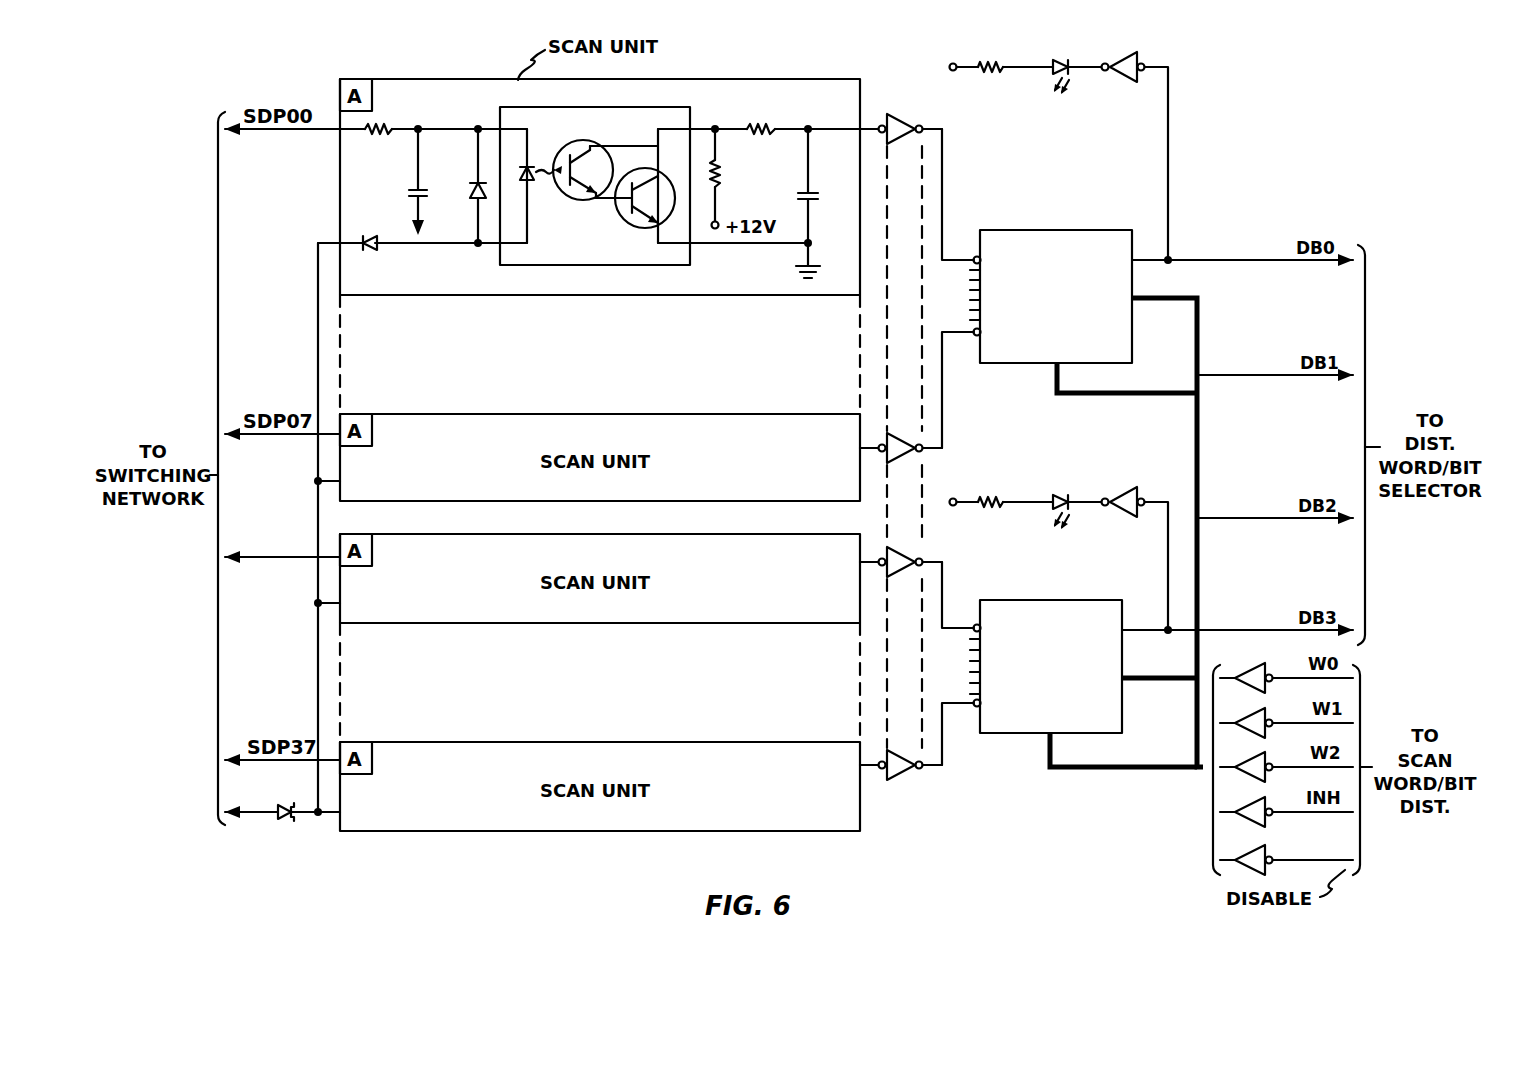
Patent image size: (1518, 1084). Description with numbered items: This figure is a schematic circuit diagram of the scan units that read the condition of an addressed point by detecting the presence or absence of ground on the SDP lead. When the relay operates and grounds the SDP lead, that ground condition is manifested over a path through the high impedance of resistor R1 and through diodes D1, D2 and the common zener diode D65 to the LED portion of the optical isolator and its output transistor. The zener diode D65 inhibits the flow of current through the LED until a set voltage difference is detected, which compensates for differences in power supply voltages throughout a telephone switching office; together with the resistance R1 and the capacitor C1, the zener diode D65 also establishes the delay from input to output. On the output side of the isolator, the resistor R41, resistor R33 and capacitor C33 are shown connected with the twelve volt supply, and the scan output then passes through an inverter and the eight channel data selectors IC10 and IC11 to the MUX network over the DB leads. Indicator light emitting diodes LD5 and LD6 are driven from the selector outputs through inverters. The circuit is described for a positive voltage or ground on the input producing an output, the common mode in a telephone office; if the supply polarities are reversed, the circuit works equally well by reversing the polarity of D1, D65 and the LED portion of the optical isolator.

The resistor R1 is at (378, 144).
The capacitor C1 is at (405, 182).
The diode D1 is at (369, 256).
The diode D2 is at (467, 186).
The resistor R41 is at (754, 119).
The resistor R33 is at (736, 179).
The capacitor C33 is at (824, 203).
The eight channel data selector IC10 is at (1046, 284).
The eight channel data selector IC11 is at (1041, 653).
The light emitting diode LD5 is at (1030, 146).
The light emitting diode LD6 is at (1030, 548).
The common zener diode D65 is at (271, 824).